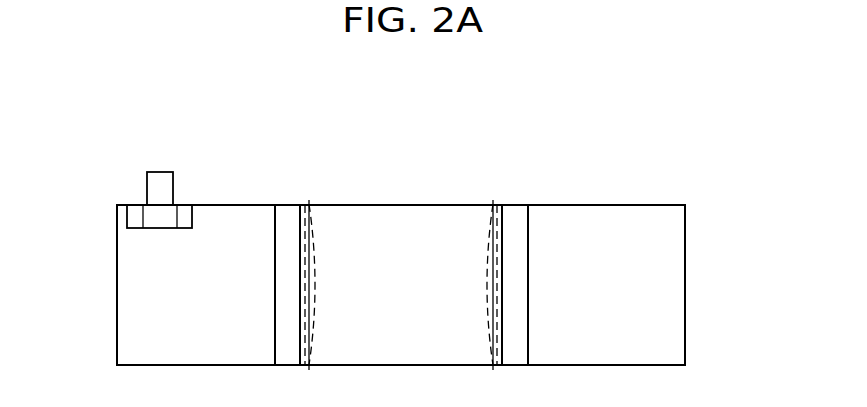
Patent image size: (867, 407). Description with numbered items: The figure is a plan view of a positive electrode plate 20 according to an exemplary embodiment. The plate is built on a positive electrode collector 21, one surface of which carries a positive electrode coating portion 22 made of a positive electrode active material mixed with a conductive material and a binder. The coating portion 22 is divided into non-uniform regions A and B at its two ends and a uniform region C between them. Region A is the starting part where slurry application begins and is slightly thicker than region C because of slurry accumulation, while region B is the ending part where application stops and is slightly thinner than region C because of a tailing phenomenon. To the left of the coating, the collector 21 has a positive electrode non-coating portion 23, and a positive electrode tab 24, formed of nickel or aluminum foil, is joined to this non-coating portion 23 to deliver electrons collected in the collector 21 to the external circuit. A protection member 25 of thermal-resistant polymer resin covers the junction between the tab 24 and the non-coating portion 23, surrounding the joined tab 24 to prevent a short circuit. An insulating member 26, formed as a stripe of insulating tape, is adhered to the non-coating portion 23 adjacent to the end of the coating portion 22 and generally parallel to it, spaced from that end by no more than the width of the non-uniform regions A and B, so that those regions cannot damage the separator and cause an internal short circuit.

The positive electrode plate 20 is at (654, 164).
The positive electrode collector 21 is at (174, 322).
The positive electrode coating portion 22 is at (465, 215).
The positive electrode non-coating portion 23 is at (162, 287).
The positive electrode tab 24 is at (160, 190).
The protection member 25 is at (160, 217).
The insulating member 26 is at (287, 215).
The non-uniform region A is at (308, 212).
The non-uniform region B is at (493, 212).
The uniform region C is at (373, 212).